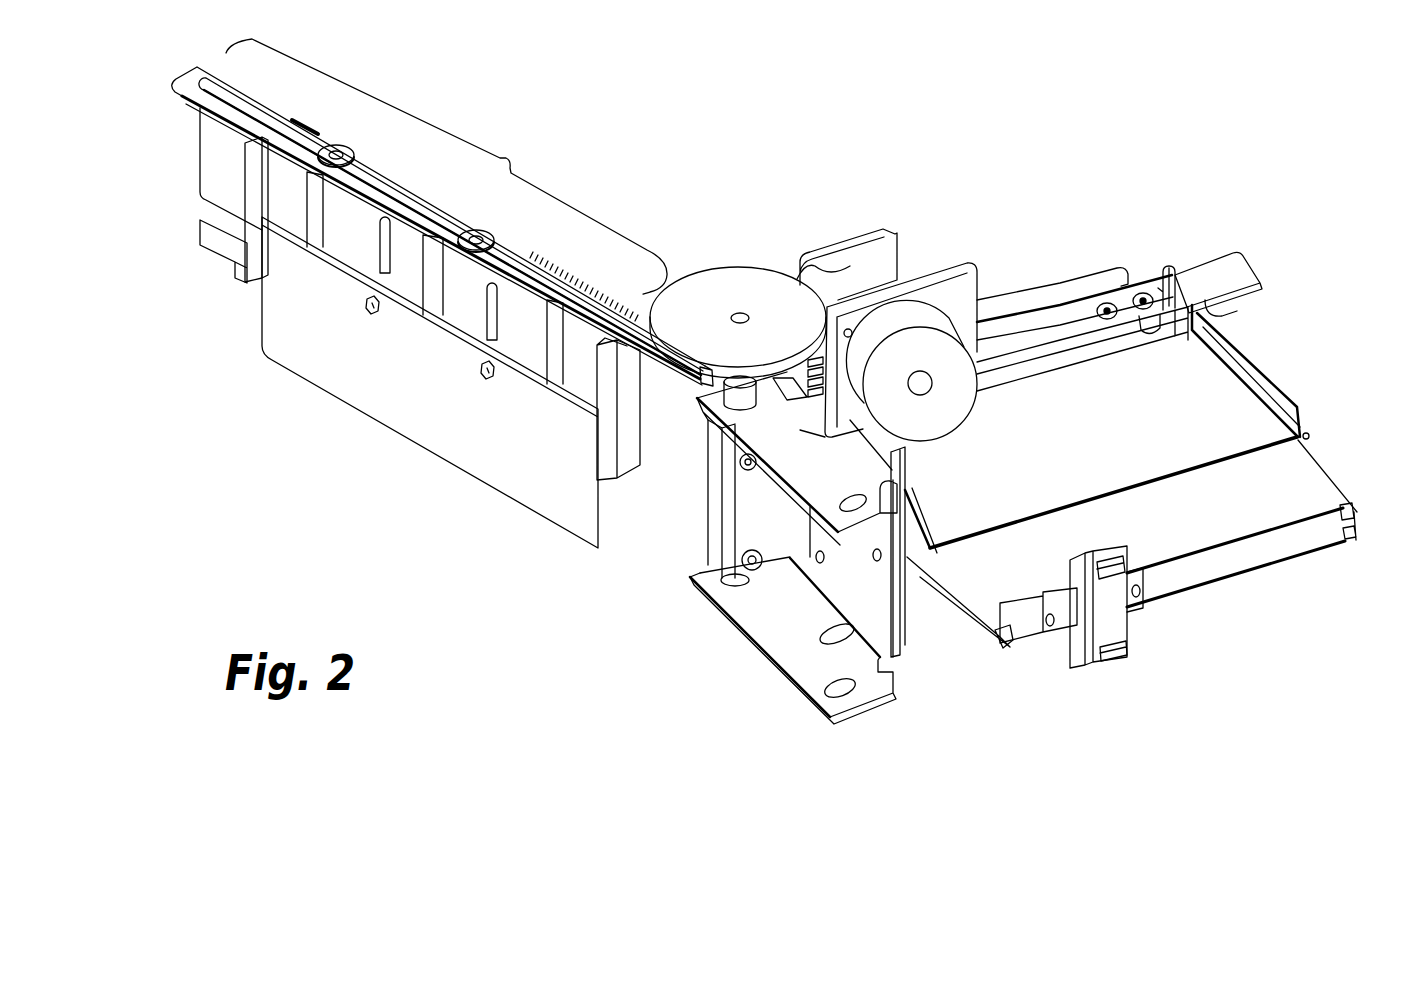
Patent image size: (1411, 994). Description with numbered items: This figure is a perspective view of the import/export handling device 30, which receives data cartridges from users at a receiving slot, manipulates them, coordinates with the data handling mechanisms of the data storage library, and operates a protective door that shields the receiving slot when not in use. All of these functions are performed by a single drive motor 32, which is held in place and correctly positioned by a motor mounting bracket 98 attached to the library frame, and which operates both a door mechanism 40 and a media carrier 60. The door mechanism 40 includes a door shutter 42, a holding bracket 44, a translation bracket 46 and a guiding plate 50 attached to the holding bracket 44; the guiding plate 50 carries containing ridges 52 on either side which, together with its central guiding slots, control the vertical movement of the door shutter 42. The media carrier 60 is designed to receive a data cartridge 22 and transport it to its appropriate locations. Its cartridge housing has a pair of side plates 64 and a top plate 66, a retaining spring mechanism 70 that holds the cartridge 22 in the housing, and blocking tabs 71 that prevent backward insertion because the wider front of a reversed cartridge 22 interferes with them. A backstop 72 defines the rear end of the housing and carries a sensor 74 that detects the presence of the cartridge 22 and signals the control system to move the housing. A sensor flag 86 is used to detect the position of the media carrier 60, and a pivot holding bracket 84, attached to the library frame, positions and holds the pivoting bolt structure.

The data cartridge 22 is at (1080, 283).
The import/export handling device 30 is at (950, 128).
The drive motor 32 is at (948, 342).
The door mechanism 40 is at (500, 158).
The door shutter 42 is at (420, 430).
The holding bracket 44 is at (220, 237).
The translation bracket 46 is at (180, 92).
The guiding plate 50 is at (527, 347).
The containing ridges 52 is at (618, 488).
The media carrier 60 is at (995, 705).
The side plates 64 is at (912, 628).
The top plate 66 is at (1213, 390).
The retaining spring mechanism 70 is at (957, 615).
The blocking tabs 71 is at (983, 640).
The backstop 72 is at (1207, 570).
The sensor 74 is at (1120, 628).
The pivot holding bracket 84 is at (800, 663).
The sensor flag 86 is at (1167, 283).
The motor mounting bracket 98 is at (953, 283).